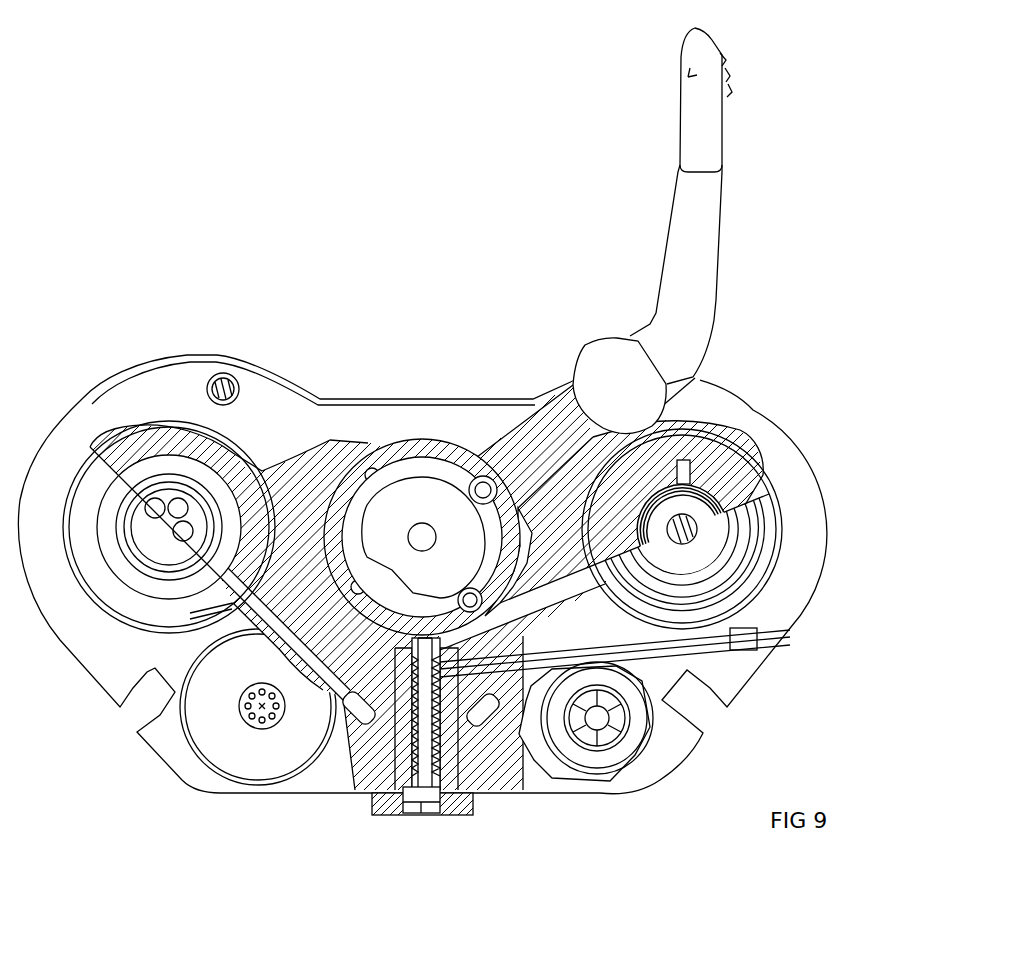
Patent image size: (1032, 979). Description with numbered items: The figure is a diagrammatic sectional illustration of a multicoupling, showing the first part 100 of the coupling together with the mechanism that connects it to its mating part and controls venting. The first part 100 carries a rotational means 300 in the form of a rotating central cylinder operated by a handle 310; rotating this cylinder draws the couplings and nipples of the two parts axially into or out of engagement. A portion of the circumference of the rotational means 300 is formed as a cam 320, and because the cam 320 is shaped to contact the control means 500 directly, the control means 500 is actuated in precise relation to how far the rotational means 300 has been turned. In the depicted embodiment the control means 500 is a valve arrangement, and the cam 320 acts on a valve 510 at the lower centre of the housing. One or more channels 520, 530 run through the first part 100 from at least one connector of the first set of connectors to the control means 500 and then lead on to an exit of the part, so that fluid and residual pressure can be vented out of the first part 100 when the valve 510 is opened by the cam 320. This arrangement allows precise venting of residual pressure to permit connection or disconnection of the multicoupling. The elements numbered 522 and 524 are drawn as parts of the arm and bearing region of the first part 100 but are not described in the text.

The first part 100 is at (753, 423).
The rotational means 300 is at (427, 450).
The handle 310 is at (692, 125).
The cam 320 is at (342, 495).
The control means 500 is at (457, 807).
The valve 510 is at (430, 742).
The channel 520 is at (265, 565).
The bearing 522 is at (193, 460).
The bearing boss 524 is at (157, 432).
The channel 530 is at (763, 640).